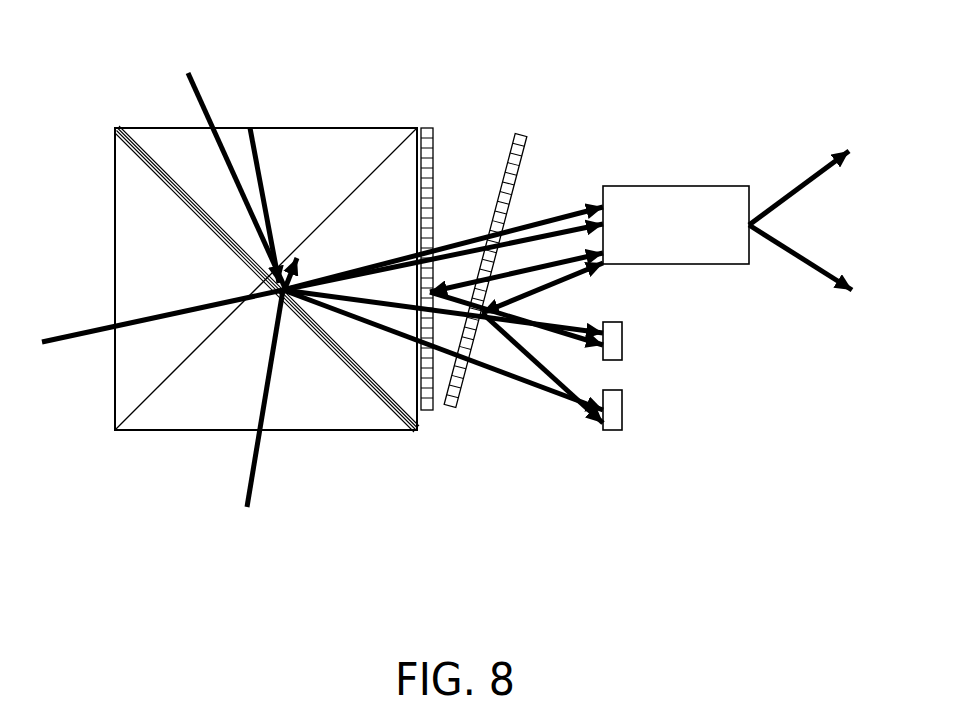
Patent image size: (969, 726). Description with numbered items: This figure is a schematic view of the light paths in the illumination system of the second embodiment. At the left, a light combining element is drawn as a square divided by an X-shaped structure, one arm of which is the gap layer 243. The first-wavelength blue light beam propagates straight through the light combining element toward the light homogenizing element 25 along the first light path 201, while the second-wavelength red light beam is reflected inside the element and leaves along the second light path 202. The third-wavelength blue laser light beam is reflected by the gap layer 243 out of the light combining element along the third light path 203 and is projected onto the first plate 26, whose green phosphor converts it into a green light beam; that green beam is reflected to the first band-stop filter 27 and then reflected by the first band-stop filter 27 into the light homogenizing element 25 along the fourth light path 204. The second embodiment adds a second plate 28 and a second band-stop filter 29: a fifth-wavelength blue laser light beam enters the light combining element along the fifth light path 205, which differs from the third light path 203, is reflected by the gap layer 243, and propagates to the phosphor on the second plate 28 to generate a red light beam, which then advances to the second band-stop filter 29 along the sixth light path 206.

The first light path 201 is at (67, 333).
The second light path 202 is at (255, 478).
The third light path 203 is at (262, 172).
The fourth light path 204 is at (563, 323).
The fifth light path 205 is at (200, 88).
The sixth light path 206 is at (578, 381).
The gap layer 243 is at (148, 157).
The light homogenizing element 25 is at (699, 200).
The first plate 26 is at (617, 339).
The first band-stop filter 27 is at (427, 141).
The second plate 28 is at (617, 420).
The second band-stop filter 29 is at (518, 137).